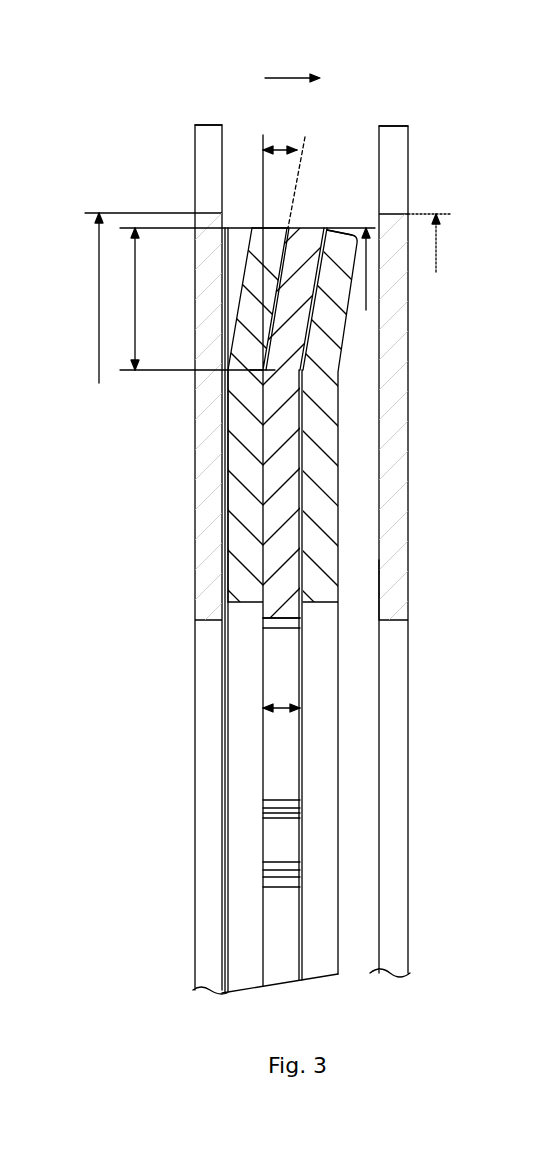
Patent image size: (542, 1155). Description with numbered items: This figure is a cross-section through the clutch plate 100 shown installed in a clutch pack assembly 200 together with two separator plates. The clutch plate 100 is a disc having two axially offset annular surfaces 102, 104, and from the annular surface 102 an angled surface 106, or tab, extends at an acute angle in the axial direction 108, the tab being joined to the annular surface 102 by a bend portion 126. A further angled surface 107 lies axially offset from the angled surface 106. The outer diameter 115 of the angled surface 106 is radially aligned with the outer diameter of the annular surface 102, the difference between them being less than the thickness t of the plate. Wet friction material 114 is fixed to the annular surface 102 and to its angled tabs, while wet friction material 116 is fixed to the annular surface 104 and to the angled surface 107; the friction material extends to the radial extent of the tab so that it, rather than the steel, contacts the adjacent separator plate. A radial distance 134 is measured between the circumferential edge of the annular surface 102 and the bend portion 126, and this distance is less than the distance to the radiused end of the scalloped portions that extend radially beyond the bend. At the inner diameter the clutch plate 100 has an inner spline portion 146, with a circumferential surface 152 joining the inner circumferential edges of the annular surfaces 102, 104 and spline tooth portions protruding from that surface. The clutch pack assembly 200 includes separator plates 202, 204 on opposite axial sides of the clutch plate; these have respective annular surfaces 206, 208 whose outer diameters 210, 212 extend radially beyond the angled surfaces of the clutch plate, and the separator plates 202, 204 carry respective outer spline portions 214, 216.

The clutch plate 100 is at (360, 206).
The annular surface 102 is at (262, 492).
The annular surface 104 is at (302, 483).
The angled surface 106 is at (273, 297).
The angled surface 107 is at (305, 330).
The axial direction 108 is at (293, 77).
The wet friction material 114 is at (232, 397).
The outer diameter 115 is at (368, 296).
The wet friction material 116 is at (320, 418).
The bend portion 126 is at (255, 366).
The radial distance 134 is at (136, 303).
The inner spline portion 146 is at (264, 845).
The circumferential surface 152 is at (263, 621).
The clutch pack assembly 200 is at (188, 117).
The separator plate 202 is at (200, 170).
The separator plate 204 is at (397, 187).
The annular surface 206 is at (228, 227).
The annular surface 208 is at (382, 587).
The outer diameter 210 is at (98, 302).
The outer diameter 212 is at (438, 238).
The outer spline portion 214 is at (206, 133).
The outer spline portion 216 is at (395, 118).
The thickness t is at (275, 712).